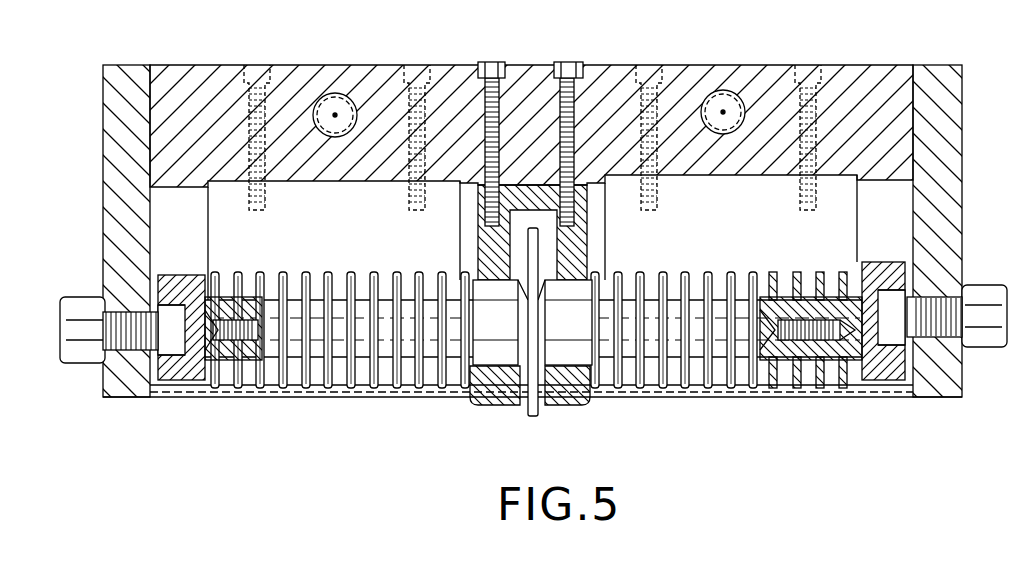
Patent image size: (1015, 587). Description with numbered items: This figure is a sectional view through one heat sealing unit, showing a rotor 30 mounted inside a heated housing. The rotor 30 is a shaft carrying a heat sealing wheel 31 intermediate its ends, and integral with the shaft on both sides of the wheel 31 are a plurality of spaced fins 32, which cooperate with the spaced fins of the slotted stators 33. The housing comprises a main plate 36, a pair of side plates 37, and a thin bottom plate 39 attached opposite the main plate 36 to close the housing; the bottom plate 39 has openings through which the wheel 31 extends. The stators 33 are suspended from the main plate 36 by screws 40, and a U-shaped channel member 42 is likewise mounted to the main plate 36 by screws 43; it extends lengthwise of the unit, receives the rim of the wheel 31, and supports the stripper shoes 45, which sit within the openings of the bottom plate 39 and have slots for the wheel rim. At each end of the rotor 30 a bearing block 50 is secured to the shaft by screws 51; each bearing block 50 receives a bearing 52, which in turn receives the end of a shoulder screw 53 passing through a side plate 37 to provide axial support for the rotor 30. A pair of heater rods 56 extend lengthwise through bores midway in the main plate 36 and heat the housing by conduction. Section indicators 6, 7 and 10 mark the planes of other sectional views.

The section line 6- 6 is at (568, 55).
The section line 7- 7 is at (675, 240).
The section line 10- 10 is at (735, 160).
The rotor 30 is at (366, 299).
The heat sealing wheel 31 is at (526, 258).
The fins 32 is at (286, 272).
The slotted stator 33 is at (532, 237).
The main plate 36 is at (308, 76).
The side plate 37 is at (118, 92).
The bottom plate 39 is at (300, 393).
The screws 40 is at (252, 64).
The U-shaped channel member 42 is at (588, 240).
The screws 43 is at (566, 64).
The stripper shoe 45 is at (480, 406).
The bearing block 50 is at (184, 381).
The screws 51 is at (236, 362).
The bearing 52 is at (162, 352).
The shoulder screw 53 is at (76, 302).
The heater rod 56 is at (338, 100).